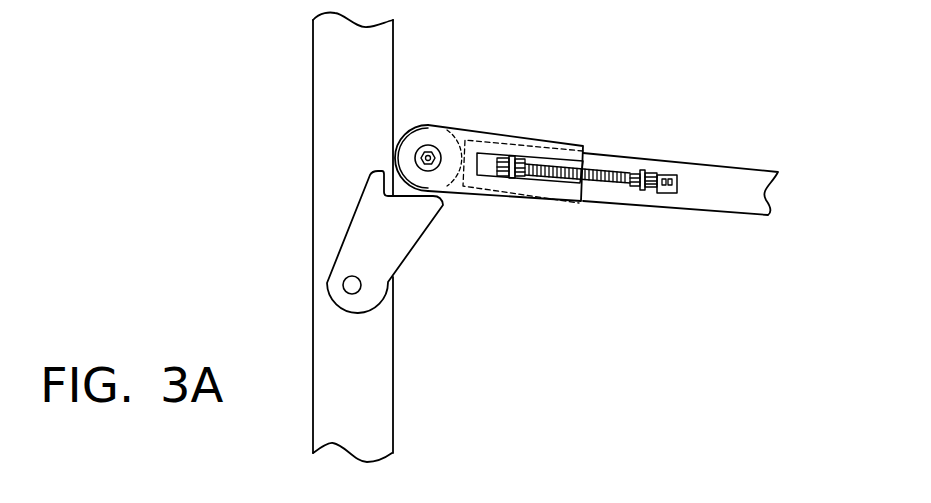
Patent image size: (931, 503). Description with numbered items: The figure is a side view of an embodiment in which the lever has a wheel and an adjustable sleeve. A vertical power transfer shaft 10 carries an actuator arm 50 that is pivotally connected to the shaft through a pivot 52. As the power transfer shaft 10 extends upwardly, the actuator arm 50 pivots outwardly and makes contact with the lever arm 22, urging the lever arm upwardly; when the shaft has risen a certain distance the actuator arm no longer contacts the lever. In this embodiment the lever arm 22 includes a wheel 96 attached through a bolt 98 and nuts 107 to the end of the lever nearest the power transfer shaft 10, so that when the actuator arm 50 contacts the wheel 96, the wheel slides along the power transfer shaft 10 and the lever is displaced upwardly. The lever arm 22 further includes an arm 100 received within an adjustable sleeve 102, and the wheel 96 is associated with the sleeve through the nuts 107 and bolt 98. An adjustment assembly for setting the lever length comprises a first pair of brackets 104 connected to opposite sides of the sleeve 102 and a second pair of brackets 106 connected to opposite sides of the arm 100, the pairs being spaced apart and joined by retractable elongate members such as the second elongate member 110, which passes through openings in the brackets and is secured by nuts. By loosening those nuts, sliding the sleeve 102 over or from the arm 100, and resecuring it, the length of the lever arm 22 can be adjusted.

The power transfer shaft 10 is at (313, 88).
The lever arm 22 is at (530, 164).
The actuator arm 50 is at (341, 242).
The pivot 52 is at (343, 285).
The wheel 96 is at (489, 107).
The bolt 98 is at (440, 147).
The nuts 107 is at (430, 150).
The arm 100 is at (738, 162).
The adjustable sleeve 102 is at (566, 200).
The first pair of brackets 104 is at (497, 178).
The second pair of brackets 106 is at (642, 193).
The second elongate member 110 is at (611, 172).